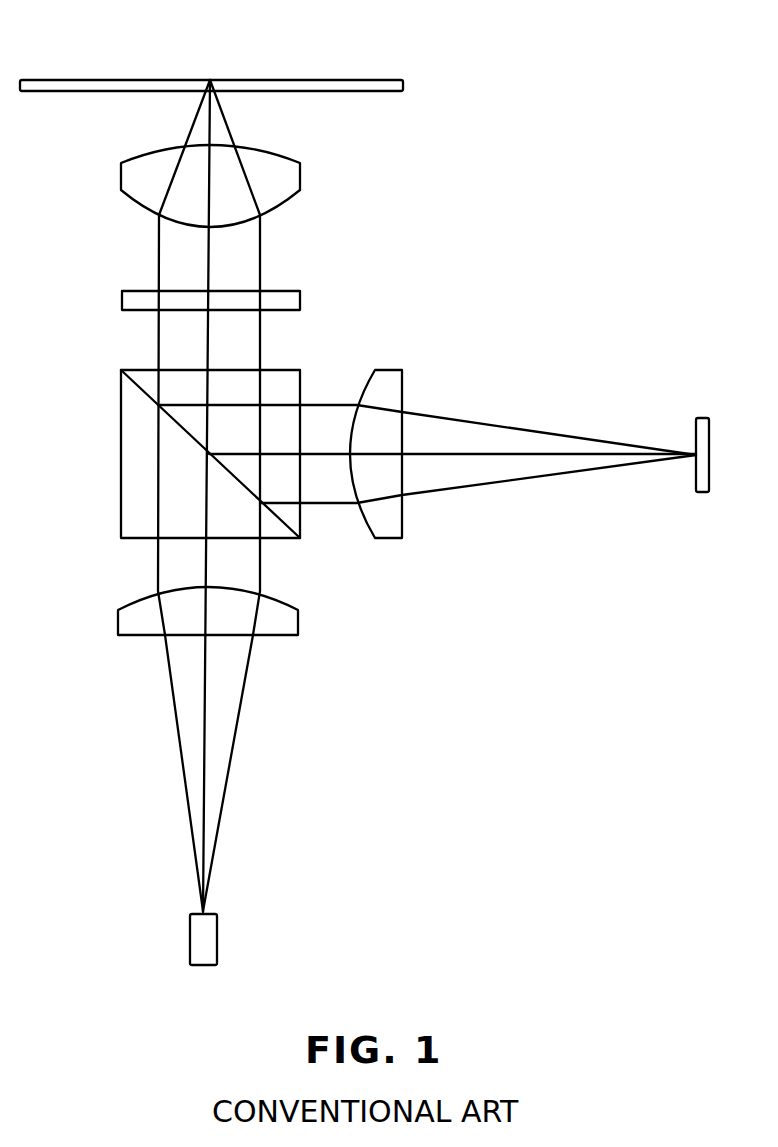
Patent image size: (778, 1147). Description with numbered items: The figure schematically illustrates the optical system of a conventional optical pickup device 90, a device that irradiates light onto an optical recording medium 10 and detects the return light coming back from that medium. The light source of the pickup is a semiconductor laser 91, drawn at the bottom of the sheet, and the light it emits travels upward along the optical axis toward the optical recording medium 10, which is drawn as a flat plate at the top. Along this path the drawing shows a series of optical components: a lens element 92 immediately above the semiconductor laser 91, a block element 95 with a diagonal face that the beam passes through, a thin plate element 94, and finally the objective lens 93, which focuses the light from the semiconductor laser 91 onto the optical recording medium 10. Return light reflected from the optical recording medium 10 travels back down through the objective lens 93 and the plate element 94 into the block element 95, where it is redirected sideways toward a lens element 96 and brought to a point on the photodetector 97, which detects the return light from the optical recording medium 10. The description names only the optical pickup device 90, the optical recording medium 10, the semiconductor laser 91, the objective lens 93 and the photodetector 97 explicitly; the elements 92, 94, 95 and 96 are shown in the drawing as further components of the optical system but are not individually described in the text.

The optical pickup device 90 is at (566, 90).
The optical recording medium 10 is at (341, 80).
The semiconductor laser 91 is at (217, 938).
The collimator lens 92 is at (298, 622).
The objective lens 93 is at (300, 172).
The quarter wave plate 94 is at (300, 297).
The polarizing beam splitter 95 is at (121, 441).
The condenser lens 96 is at (387, 370).
The photodetector 97 is at (700, 418).